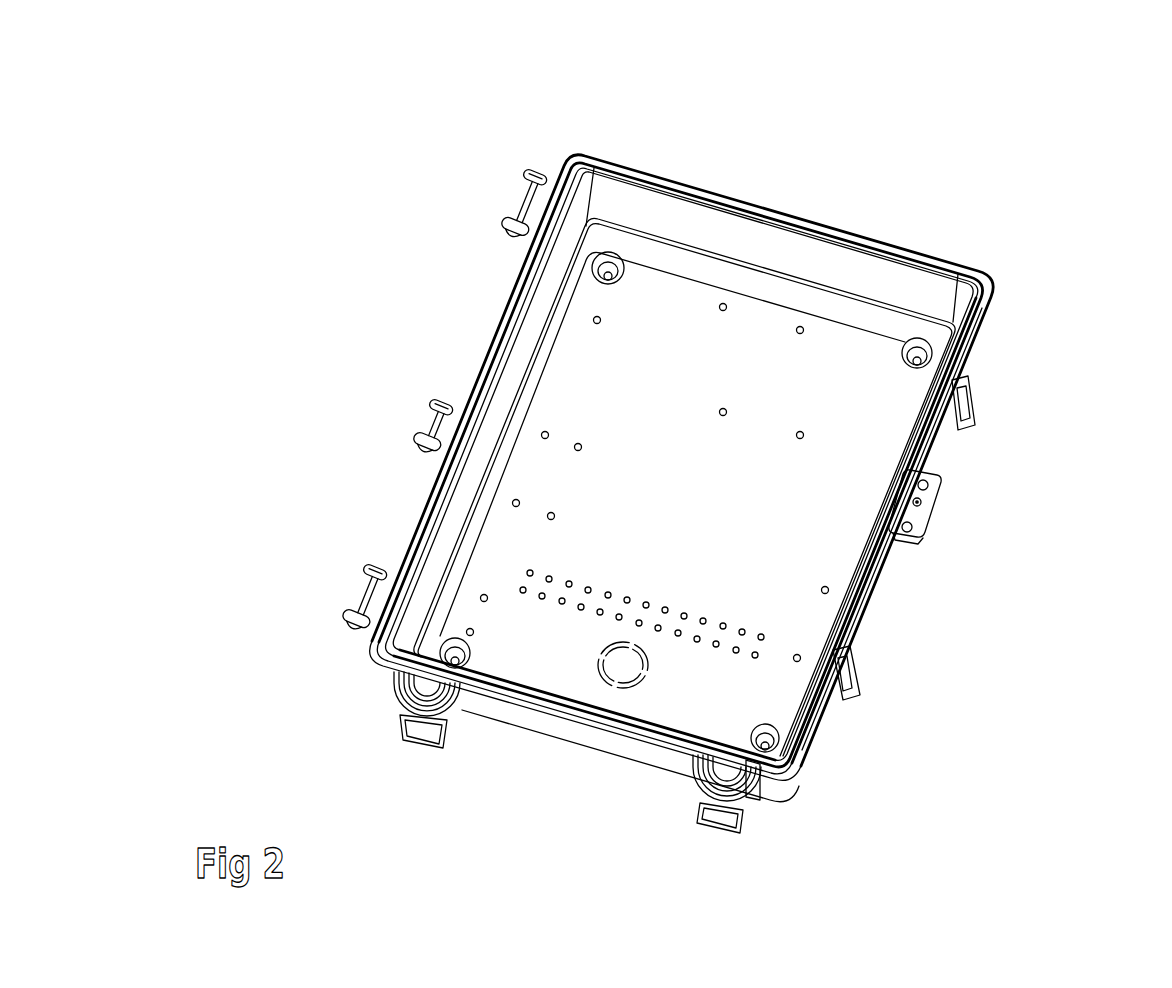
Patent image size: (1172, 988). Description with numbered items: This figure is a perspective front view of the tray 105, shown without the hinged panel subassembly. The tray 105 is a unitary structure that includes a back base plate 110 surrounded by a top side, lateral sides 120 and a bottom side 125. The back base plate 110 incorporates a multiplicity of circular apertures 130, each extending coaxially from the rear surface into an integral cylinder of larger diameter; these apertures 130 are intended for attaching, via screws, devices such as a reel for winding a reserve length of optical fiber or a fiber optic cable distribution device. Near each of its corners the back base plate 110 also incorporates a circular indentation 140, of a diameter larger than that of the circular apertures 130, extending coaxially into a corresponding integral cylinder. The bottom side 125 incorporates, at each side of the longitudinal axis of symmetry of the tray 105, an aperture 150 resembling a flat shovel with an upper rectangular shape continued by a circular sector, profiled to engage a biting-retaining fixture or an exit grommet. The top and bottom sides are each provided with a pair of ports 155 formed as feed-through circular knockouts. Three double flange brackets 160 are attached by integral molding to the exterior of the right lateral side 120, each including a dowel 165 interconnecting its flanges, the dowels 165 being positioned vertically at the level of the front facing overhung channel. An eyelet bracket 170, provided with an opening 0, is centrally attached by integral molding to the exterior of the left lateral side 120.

The tray 105 is at (682, 465).
The back base plate 110 is at (720, 505).
The lateral sides 120 is at (867, 610).
The bottom side 125 is at (573, 742).
The circular apertures 130 is at (723, 625).
The circular indentation 140 is at (627, 255).
The aperture 150 is at (400, 711).
The ports 155 is at (620, 657).
The double flange brackets 160 is at (425, 442).
The dowel 165 is at (432, 418).
The eyelet bracket 170 is at (905, 513).
The mounting hole 0 is at (923, 500).